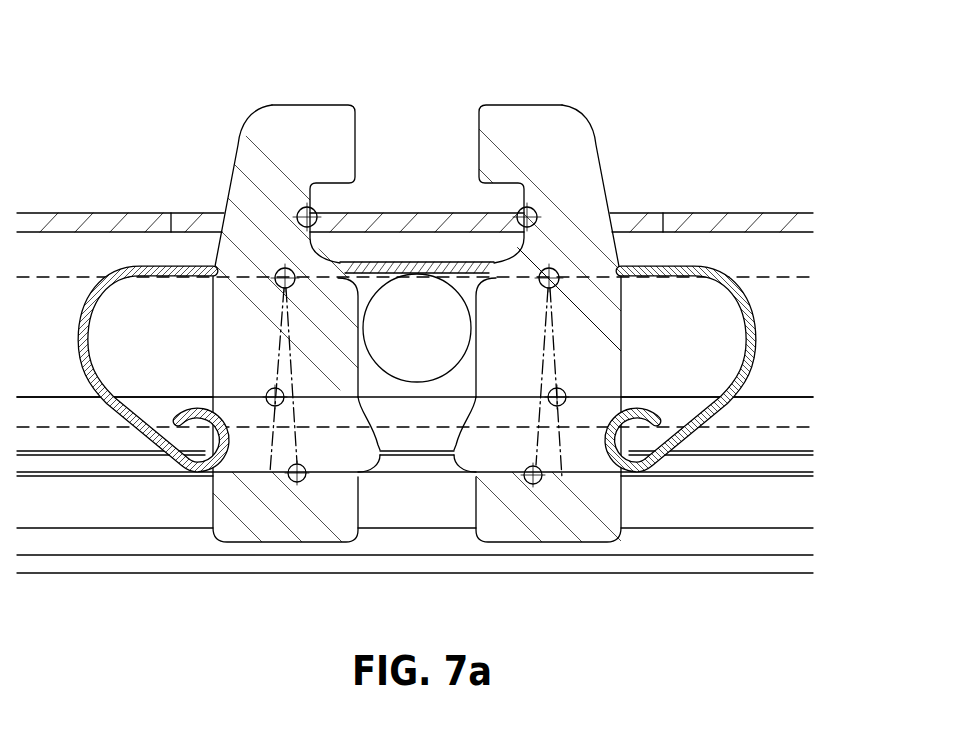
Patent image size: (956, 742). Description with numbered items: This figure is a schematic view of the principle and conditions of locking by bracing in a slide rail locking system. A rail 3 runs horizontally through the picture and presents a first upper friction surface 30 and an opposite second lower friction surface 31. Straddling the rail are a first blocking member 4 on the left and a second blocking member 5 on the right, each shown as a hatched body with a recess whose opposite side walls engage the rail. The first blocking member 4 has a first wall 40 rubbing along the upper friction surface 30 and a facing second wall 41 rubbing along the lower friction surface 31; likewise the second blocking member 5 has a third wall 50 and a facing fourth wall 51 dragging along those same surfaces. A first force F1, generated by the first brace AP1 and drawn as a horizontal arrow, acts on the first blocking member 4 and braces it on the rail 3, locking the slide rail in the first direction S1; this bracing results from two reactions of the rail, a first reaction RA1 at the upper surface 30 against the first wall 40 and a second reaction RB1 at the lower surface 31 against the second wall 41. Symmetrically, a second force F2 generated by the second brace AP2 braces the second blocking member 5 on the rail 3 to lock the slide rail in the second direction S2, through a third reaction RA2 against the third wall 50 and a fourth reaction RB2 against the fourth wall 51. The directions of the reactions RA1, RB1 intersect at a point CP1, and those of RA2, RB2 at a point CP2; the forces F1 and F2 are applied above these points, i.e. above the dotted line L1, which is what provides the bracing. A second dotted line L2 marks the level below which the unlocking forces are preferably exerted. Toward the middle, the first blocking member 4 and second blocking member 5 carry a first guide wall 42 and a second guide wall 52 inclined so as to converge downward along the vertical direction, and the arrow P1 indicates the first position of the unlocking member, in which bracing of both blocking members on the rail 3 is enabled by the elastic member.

The rail 3 is at (800, 414).
The first blocking member 4 is at (303, 104).
The second blocking member 5 is at (522, 104).
The first upper friction surface 30 is at (55, 396).
The second lower friction surface 31 is at (110, 476).
The first wall 40 is at (265, 392).
The third wall 50 is at (572, 392).
The second wall 41 is at (269, 476).
The fourth wall 51 is at (562, 480).
The first guide wall 42 is at (392, 452).
The second guide wall 52 is at (440, 452).
The first position P1 is at (405, 92).
The first direction S1 is at (172, 133).
The second direction S2 is at (709, 133).
The first brace AP1 is at (318, 214).
The second brace AP2 is at (518, 212).
The first force F1 is at (297, 217).
The second force F2 is at (572, 217).
The point of intersection CP1 is at (263, 270).
The point of intersection CP2 is at (566, 270).
The dotted line L1 is at (790, 277).
The dotted line L2 is at (790, 427).
The first reaction RA1 is at (276, 388).
The third reaction RA2 is at (556, 388).
The second reaction RB1 is at (298, 482).
The fourth reaction RB2 is at (533, 484).